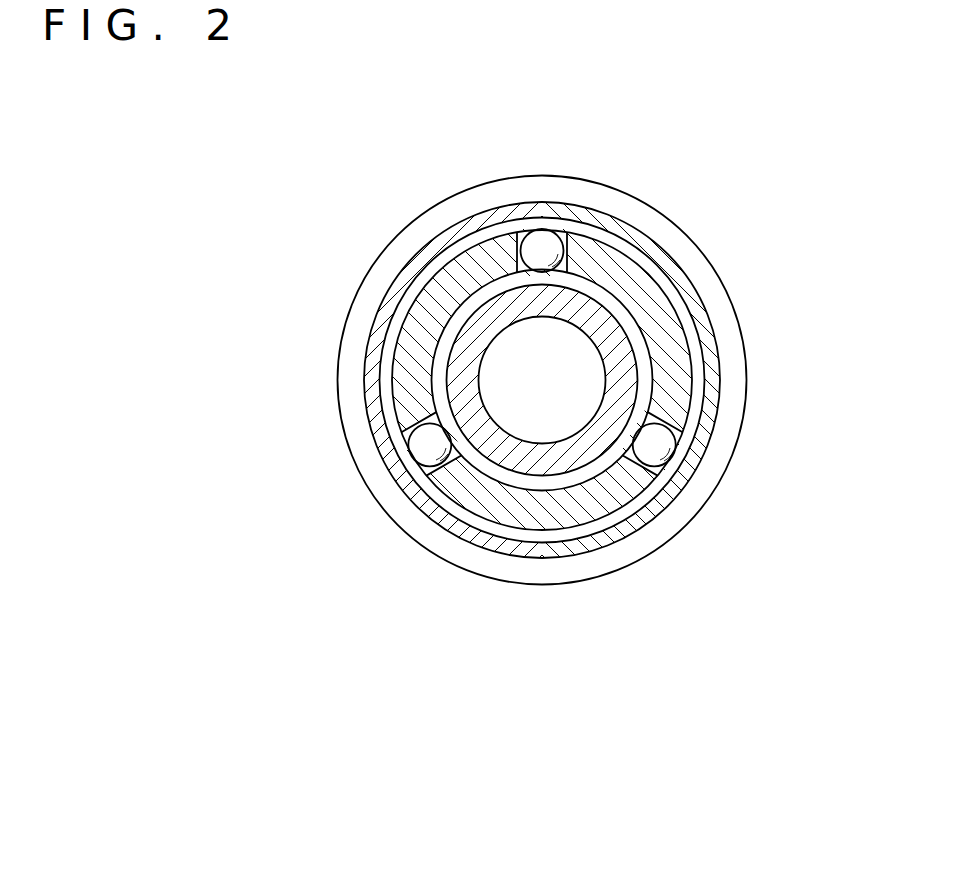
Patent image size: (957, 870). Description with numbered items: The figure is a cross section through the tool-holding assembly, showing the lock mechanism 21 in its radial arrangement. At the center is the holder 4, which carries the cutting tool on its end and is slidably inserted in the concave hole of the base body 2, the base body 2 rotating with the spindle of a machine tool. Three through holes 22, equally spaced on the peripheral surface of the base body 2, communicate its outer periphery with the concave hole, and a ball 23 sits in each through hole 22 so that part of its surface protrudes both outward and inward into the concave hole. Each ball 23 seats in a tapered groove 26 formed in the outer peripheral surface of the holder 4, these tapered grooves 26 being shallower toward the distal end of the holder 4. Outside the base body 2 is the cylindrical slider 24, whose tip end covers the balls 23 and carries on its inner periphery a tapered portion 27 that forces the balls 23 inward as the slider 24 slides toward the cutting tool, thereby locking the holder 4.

The base body 2 is at (625, 280).
The holder 4 is at (487, 318).
The lock mechanism 21 is at (552, 230).
The through holes 22 is at (665, 440).
The balls 23 is at (422, 447).
The cylindrical slider 24 is at (720, 308).
The tapered grooves 26 is at (495, 473).
The tapered portion 27 is at (392, 333).